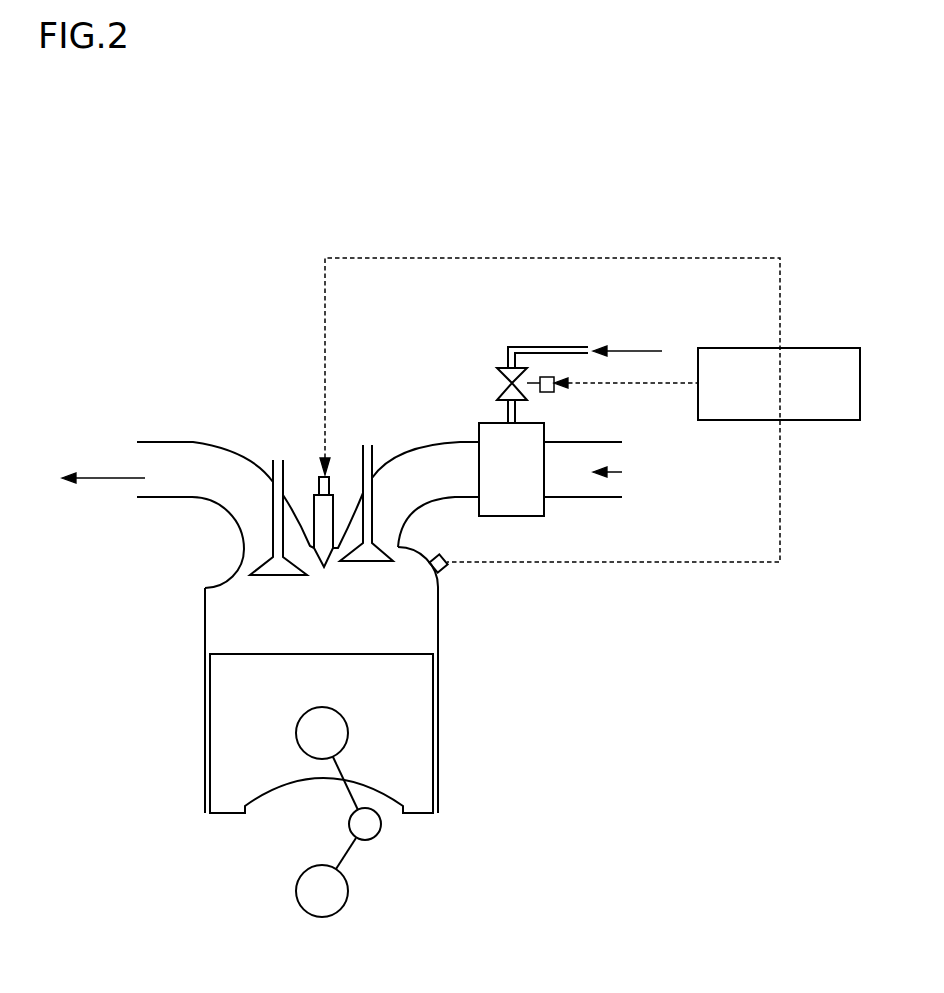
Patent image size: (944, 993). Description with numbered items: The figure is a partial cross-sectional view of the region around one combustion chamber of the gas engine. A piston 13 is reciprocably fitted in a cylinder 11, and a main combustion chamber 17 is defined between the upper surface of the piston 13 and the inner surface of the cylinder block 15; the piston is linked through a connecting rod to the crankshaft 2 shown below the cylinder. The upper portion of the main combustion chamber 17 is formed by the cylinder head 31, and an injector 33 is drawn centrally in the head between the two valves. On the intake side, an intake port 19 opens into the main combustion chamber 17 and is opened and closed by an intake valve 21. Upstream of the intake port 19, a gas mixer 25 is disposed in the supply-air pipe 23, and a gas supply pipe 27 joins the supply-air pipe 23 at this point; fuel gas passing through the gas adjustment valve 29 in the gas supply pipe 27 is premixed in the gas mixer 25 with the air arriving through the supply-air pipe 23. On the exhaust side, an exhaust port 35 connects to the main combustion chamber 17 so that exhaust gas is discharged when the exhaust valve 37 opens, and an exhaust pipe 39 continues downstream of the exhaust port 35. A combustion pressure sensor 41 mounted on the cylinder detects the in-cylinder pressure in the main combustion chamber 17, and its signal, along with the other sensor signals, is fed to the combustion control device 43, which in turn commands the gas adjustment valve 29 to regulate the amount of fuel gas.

The crankshaft 2 is at (345, 905).
The cylinder 11 is at (440, 607).
The piston 13 is at (222, 713).
The cylinder block 15 is at (438, 670).
The main combustion chamber 17 is at (222, 630).
The intake port 19 is at (430, 508).
The intake valve 21 is at (374, 466).
The supply-air pipe 23 is at (580, 498).
The gas mixer 25 is at (479, 432).
The gas supply pipe 27 is at (556, 347).
The gas adjustment valve 29 is at (500, 376).
The cylinder head 31 is at (217, 558).
The pilot fuel injector 33 is at (331, 481).
The exhaust port 35 is at (220, 513).
The exhaust valve 37 is at (273, 462).
The exhaust pipe 39 is at (193, 441).
The combustion pressure sensor 41 is at (447, 568).
The combustion control device 43 is at (820, 348).